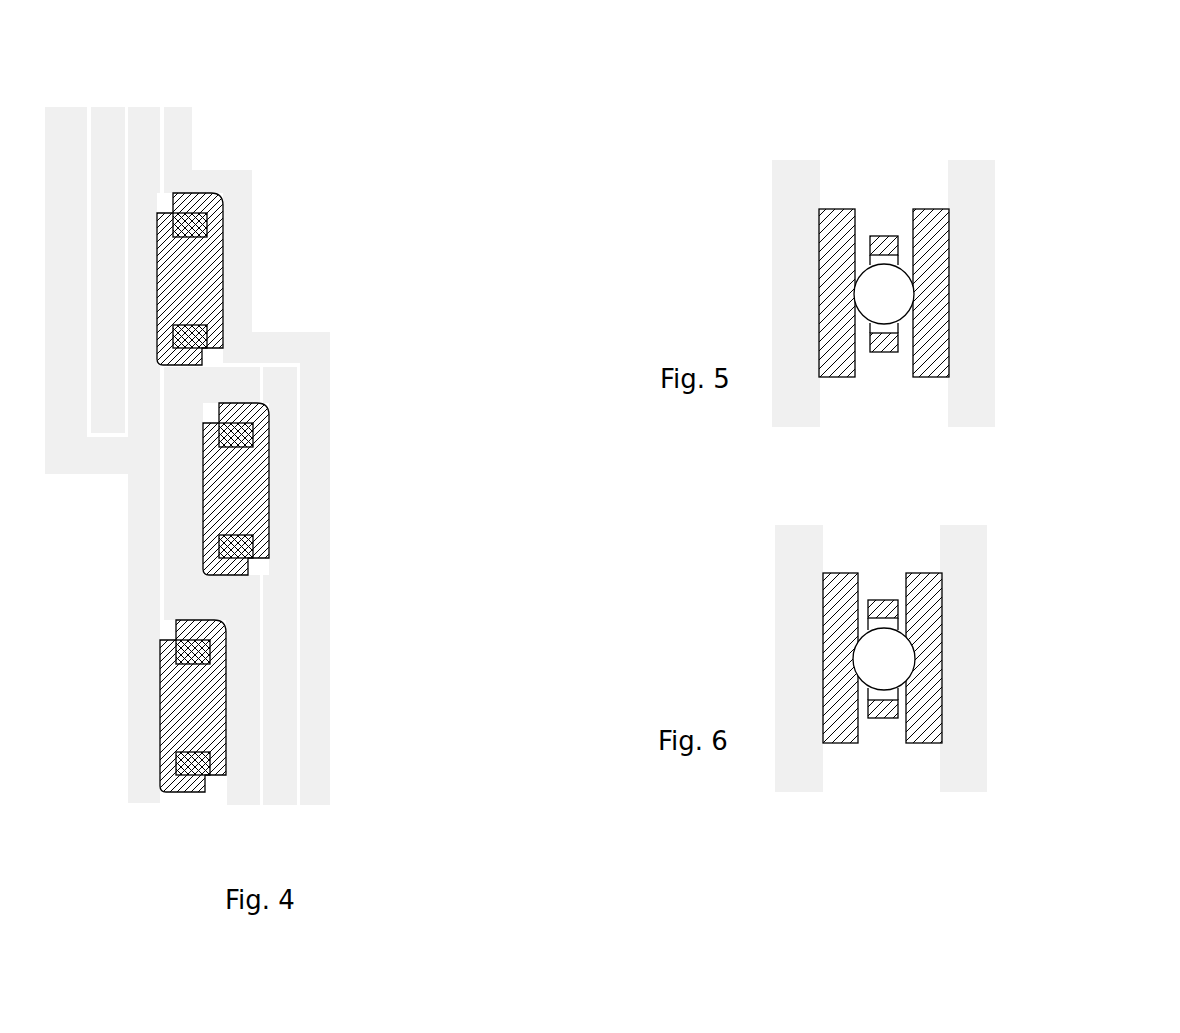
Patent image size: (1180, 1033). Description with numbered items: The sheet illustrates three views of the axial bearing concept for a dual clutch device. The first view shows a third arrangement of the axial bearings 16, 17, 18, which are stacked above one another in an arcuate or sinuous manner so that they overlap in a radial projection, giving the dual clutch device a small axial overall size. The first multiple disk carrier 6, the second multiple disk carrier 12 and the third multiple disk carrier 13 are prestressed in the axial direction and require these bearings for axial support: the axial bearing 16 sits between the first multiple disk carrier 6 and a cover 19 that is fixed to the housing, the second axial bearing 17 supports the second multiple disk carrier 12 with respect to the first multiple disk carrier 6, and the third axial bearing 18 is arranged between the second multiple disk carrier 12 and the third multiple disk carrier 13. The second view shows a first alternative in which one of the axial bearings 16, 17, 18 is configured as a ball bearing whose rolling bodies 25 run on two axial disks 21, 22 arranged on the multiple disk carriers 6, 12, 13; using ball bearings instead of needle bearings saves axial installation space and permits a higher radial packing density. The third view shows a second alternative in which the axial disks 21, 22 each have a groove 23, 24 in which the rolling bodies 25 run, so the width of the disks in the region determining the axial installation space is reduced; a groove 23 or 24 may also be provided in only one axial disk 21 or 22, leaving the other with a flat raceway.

In FIG. 4, the first multiple disk carrier 6 is at (110, 129).
In FIG. 5, the first multiple disk carrier 6 is at (873, 293).
In FIG. 6, the first multiple disk carrier 6 is at (873, 658).
In FIG. 4, the second multiple disk carrier 12 is at (152, 153).
In FIG. 5, the second multiple disk carrier 12 is at (873, 293).
In FIG. 6, the second multiple disk carrier 12 is at (873, 658).
In FIG. 4, the third multiple disk carrier 13 is at (188, 179).
In FIG. 5, the third multiple disk carrier 13 is at (973, 190).
In FIG. 6, the third multiple disk carrier 13 is at (972, 556).
In FIG. 4, the axial bearing 16 is at (189, 711).
In FIG. 5, the axial bearing 16 is at (894, 237).
In FIG. 6, the axial bearing 16 is at (894, 611).
In FIG. 4, the second axial bearing 17 is at (235, 489).
In FIG. 5, the second axial bearing 17 is at (894, 237).
In FIG. 6, the second axial bearing 17 is at (894, 611).
In FIG. 4, the third axial bearing 18 is at (189, 282).
In FIG. 5, the third axial bearing 18 is at (894, 237).
In FIG. 6, the third axial bearing 18 is at (894, 611).
In FIG. 4, the cover 19 is at (148, 598).
In FIG. 5, the cover 19 is at (792, 192).
In FIG. 6, the cover 19 is at (791, 557).
In FIG. 5, the axial disk 21 is at (933, 229).
In FIG. 6, the axial disk 21 is at (932, 596).
In FIG. 5, the axial disk 22 is at (834, 237).
In FIG. 6, the axial disk 22 is at (834, 601).
In FIG. 6, the groove 23 is at (853, 658).
In FIG. 6, the groove 24 is at (915, 658).
In FIG. 5, the rolling bodies 25 is at (873, 305).
In FIG. 6, the rolling bodies 25 is at (873, 670).